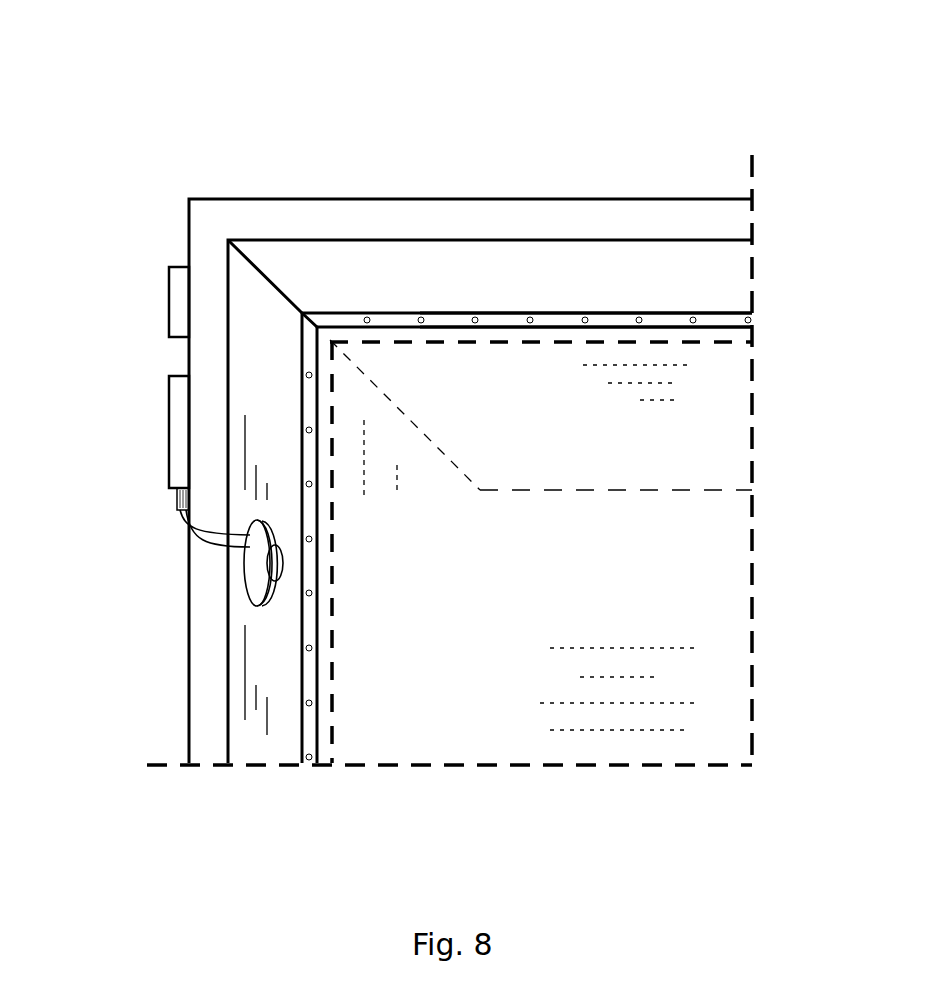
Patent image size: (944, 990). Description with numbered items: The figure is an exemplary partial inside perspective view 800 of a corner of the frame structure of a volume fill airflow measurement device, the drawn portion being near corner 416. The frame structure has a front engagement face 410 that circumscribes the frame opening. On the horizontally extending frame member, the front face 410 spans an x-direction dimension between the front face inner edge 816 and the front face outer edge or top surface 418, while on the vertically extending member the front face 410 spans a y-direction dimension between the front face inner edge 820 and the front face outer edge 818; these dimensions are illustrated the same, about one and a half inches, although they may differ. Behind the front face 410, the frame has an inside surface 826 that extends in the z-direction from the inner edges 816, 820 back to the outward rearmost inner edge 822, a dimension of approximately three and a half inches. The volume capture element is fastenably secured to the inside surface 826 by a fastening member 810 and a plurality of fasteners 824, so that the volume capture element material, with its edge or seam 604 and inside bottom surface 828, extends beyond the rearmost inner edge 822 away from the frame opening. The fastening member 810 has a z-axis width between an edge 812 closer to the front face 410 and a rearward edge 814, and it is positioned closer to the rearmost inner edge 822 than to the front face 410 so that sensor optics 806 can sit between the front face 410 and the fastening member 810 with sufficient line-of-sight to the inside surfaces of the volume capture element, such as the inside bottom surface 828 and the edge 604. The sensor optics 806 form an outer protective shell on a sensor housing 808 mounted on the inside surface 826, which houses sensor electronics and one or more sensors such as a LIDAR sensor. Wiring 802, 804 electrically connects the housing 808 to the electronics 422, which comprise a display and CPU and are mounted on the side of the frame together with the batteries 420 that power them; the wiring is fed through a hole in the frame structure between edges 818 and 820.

The partial inside perspective view 800 is at (728, 103).
The corner 416 is at (187, 197).
The top surface 418 is at (389, 198).
The front face inner edge 816 is at (498, 238).
The front face 410 is at (298, 212).
The fasteners 824 is at (378, 313).
The edge 812 is at (512, 326).
The edge 814 is at (521, 313).
The fastening member 810 is at (617, 320).
The rearmost inner edge 822 is at (722, 344).
The edge or seam 604 is at (402, 413).
The batteries 420 is at (168, 298).
The electronics 422 is at (168, 412).
The wires 804 is at (180, 508).
The wiring 802 is at (243, 540).
The sensor optics 806 is at (283, 559).
The sensor housing 808 is at (283, 586).
The inside surface 826 is at (285, 683).
The front face outer edge 818 is at (188, 660).
The front face inner edge 820 is at (228, 710).
The inside bottom surface 828 is at (706, 703).